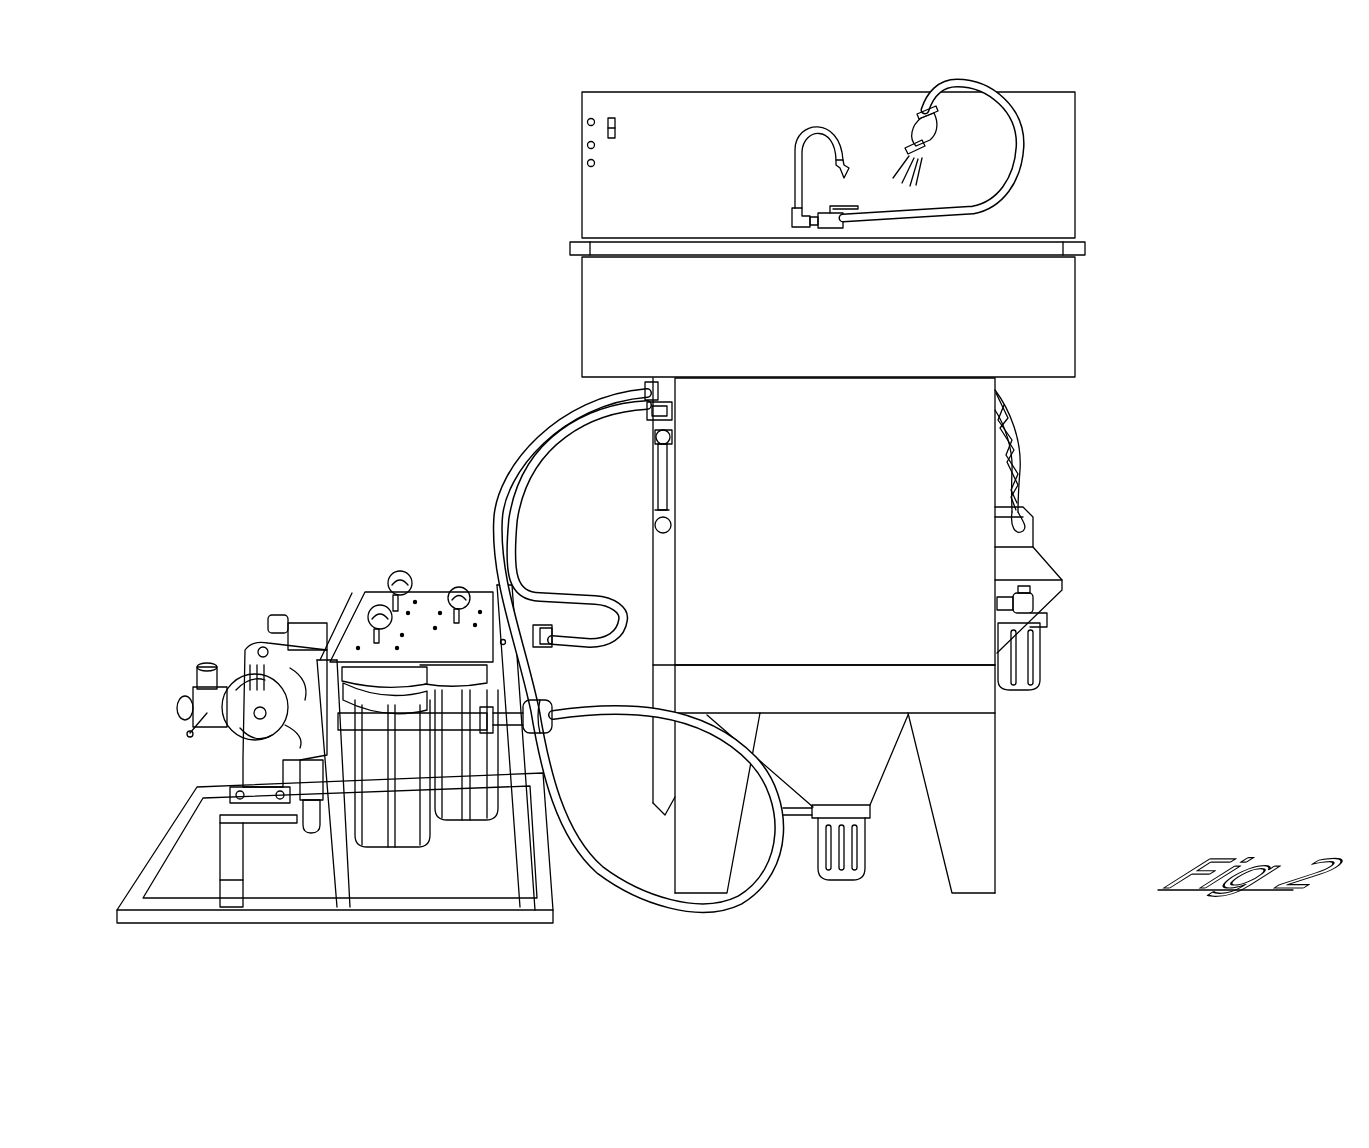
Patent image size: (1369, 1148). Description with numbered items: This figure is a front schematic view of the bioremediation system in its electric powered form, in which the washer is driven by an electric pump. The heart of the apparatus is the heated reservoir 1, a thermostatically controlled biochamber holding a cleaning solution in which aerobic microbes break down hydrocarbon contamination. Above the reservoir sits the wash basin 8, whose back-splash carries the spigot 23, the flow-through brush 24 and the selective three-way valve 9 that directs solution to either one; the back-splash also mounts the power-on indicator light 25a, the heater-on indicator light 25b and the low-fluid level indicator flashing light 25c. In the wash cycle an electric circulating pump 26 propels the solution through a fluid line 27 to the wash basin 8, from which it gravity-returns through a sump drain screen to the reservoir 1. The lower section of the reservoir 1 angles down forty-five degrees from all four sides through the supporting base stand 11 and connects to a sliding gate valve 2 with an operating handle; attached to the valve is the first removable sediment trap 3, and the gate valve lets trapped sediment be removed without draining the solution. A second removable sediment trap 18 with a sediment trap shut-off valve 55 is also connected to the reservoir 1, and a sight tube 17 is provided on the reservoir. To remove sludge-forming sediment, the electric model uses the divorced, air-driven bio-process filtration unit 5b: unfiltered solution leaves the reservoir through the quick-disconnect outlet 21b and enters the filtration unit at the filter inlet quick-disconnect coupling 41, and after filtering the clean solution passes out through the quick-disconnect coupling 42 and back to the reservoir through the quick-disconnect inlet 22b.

The heated reservoir 1 is at (848, 527).
The sliding gate valve 2 is at (797, 818).
The first removable sediment trap 3 is at (838, 882).
The bio-process filtration unit 5b is at (315, 924).
The wash basin 8 is at (848, 327).
The selective three-way valve 9 is at (850, 206).
The supporting base stand 11 is at (982, 805).
The sight tube 17 is at (662, 488).
The second removable sediment trap 18 is at (1027, 665).
The quick-disconnect outlet 21b is at (647, 416).
The quick-disconnect inlet 22b is at (668, 354).
The spigot 23 is at (820, 128).
The flow-through brush 24 is at (932, 137).
The power-on indicator light 25a is at (587, 122).
The heater-on indicator light 25b is at (587, 145).
The low-fluid level indicator flashing light 25c is at (587, 164).
The electric circulating pump 26 is at (1035, 523).
The fluid line 27 is at (1015, 448).
The filter inlet quick-disconnect coupling 41 is at (545, 705).
The quick-disconnect coupling 42 is at (545, 625).
The sediment trap shut-off valve 55 is at (1003, 603).